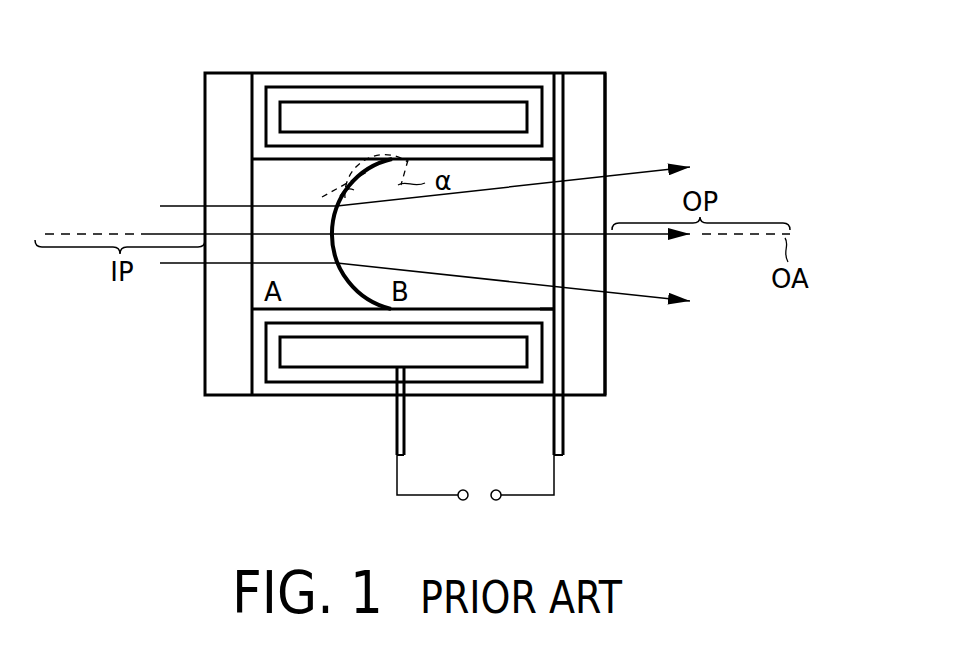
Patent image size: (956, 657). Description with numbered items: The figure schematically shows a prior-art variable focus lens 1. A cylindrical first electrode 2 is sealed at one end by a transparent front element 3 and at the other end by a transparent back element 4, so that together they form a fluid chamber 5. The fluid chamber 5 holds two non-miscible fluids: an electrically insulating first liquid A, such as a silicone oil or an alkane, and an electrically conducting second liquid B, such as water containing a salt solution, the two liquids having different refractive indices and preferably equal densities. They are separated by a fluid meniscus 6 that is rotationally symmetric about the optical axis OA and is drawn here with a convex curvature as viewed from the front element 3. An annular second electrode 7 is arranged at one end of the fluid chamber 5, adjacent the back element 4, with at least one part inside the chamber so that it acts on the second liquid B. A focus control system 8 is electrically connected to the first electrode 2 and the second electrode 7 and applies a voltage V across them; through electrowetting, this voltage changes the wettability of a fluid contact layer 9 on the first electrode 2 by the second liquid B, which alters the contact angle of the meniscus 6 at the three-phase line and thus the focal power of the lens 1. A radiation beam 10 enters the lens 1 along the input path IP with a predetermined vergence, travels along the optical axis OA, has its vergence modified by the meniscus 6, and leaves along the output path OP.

The variable focus lens 1 is at (706, 59).
The first electrode 2 is at (490, 112).
The front element 3 is at (225, 384).
The back element 4 is at (597, 383).
The fluid chamber 5 is at (260, 170).
The fluid meniscus 6 is at (338, 281).
The second electrode 7 is at (566, 113).
The focus control system 8 is at (555, 475).
The fluid contact layer 9 is at (540, 157).
The radiation beam 10 is at (171, 205).